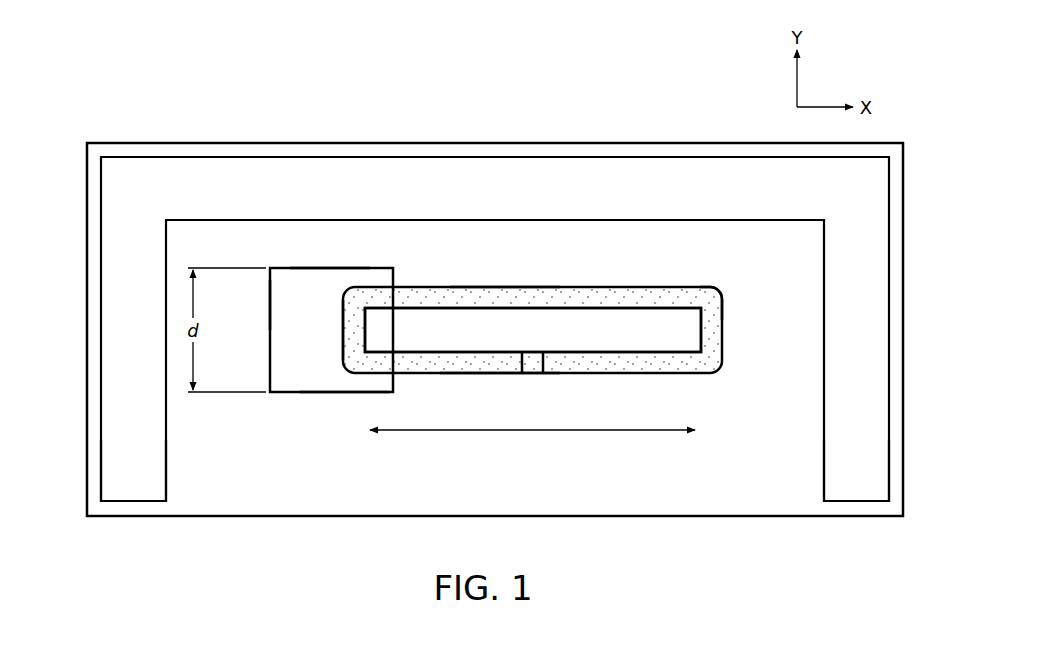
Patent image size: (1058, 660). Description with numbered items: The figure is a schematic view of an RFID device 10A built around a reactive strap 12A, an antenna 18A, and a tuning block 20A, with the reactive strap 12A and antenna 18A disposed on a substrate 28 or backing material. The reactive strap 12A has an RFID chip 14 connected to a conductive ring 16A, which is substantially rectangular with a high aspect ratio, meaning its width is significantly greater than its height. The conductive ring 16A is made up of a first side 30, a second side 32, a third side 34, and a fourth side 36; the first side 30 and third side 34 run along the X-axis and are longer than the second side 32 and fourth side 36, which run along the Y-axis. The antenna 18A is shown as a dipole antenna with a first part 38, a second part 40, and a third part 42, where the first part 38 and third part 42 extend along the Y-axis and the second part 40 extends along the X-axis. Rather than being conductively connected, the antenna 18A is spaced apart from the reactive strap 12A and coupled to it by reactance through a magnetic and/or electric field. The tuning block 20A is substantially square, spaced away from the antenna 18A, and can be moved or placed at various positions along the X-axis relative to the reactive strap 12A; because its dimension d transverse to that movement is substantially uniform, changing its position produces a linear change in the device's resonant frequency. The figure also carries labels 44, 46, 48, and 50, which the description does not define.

The RFID device 10A is at (163, 122).
The reactive strap 12A is at (717, 388).
The RFID chip 14 is at (538, 352).
The conductive ring 16A is at (722, 338).
The antenna 18A is at (891, 321).
The tuning block 20A is at (292, 375).
The substrate 28 is at (905, 224).
The first side 30 is at (493, 362).
The second side 32 is at (345, 330).
The third side 34 is at (508, 295).
The fourth side 36 is at (724, 302).
The first part 38 is at (113, 441).
The second part 40 is at (249, 165).
The third part 42 is at (887, 438).
The inner opening of heating element 44 is at (395, 343).
The left side of cooling block 46 is at (278, 301).
The top side of cooling block 48 is at (315, 285).
The bottom side of cooling block 50 is at (356, 392).